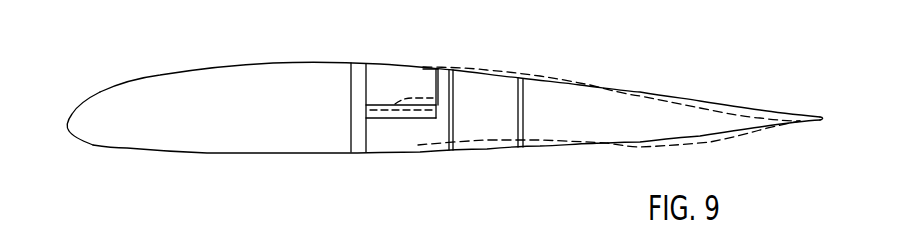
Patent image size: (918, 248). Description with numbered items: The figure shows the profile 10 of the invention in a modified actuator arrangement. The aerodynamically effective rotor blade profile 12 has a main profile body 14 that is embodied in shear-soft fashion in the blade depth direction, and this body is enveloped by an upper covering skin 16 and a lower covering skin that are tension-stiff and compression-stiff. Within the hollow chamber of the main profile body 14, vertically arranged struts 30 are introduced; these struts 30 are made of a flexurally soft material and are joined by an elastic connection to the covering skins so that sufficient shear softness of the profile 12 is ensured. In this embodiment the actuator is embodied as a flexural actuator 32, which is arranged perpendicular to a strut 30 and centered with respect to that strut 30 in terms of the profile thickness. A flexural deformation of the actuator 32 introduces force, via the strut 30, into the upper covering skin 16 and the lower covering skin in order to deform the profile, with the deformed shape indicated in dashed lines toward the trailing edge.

The profile 10 is at (90, 52).
The rotor blade profile 12 is at (131, 77).
The main profile body 14 is at (205, 68).
The upper covering skin 16 is at (193, 154).
The strut 30 is at (438, 87).
The flexural actuator 32 is at (393, 103).